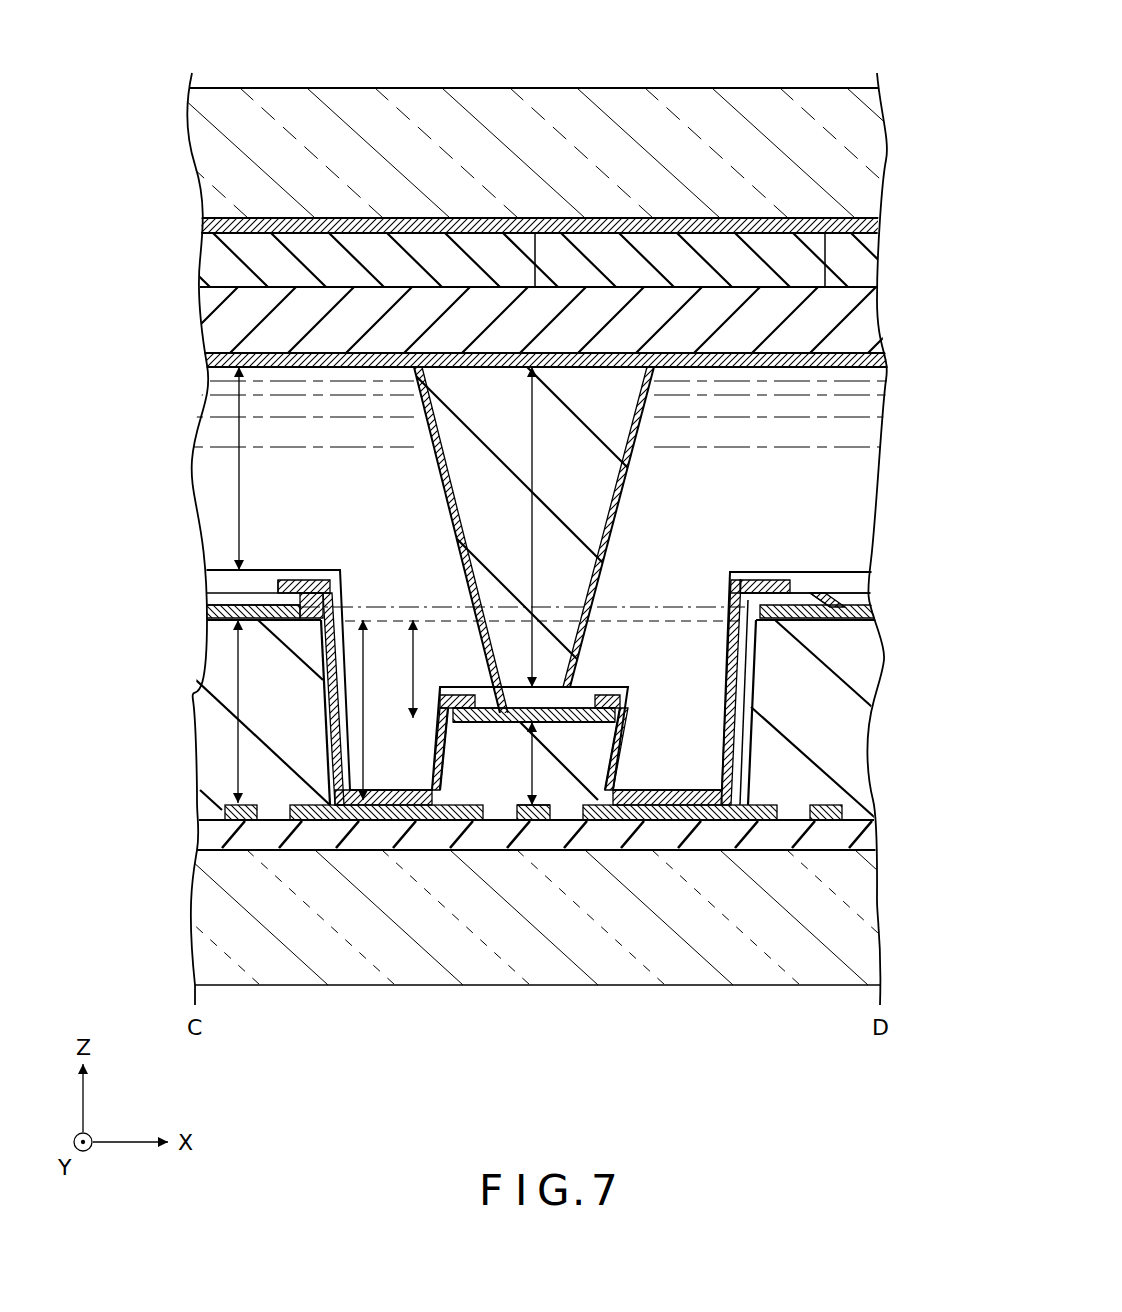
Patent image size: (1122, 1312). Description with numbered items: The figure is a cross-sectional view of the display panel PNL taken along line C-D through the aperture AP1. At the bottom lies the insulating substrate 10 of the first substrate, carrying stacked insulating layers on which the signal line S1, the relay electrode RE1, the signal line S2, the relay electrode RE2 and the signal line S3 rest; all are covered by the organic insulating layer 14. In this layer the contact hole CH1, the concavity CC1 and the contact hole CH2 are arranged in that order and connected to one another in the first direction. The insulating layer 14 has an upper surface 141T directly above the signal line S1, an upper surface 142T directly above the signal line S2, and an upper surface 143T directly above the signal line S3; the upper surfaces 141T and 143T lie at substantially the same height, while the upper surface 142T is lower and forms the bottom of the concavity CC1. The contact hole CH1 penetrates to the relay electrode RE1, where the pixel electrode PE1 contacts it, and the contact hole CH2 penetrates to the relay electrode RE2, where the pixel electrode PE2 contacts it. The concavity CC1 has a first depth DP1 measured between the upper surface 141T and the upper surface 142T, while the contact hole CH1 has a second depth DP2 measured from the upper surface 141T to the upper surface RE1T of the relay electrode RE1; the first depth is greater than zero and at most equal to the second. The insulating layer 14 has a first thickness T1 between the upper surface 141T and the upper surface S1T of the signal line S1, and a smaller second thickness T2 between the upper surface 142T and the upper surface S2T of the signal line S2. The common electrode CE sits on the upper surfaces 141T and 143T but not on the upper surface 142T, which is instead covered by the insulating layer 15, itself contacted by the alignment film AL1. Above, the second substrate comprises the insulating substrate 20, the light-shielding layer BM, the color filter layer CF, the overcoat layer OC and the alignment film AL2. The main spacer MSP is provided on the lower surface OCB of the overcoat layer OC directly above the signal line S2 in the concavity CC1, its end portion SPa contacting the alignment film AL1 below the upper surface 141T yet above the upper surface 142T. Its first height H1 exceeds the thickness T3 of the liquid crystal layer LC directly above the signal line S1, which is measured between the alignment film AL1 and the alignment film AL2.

The display panel PNL is at (780, 84).
The insulating substrate 20 is at (207, 140).
The light-shielding layer BM is at (207, 226).
The color filter layer CF is at (213, 268).
The overcoat layer OC is at (207, 318).
The alignment film AL2 is at (207, 360).
The lower surface of overcoat layer OCB is at (457, 364).
The liquid crystal layer LC is at (207, 490).
The main spacer MSP is at (608, 484).
The first height H1 is at (534, 450).
The thickness of liquid crystal layer T3 is at (241, 470).
The upper surface 141T is at (262, 600).
The pixel electrode PE1 is at (306, 582).
The second depth DP2 is at (362, 618).
The upper surface 142T is at (444, 684).
The contact hole CH1 is at (383, 727).
The end portion SPa is at (553, 657).
The aperture AP1 is at (710, 606).
The pixel electrode PE2 is at (770, 590).
The upper surface 143T is at (818, 600).
The contact hole CH2 is at (665, 712).
The alignment film AL1 is at (207, 572).
The insulating layer 15 is at (207, 603).
The common electrode CE is at (207, 613).
The insulating layer 14 is at (215, 665).
The first thickness T1 is at (240, 704).
The first depth DP1 is at (414, 690).
The concavity CC1 is at (597, 686).
The second thickness T2 is at (530, 766).
The upper surface of signal line S1T is at (230, 803).
The insulating substrate 10 is at (207, 905).
The signal line S1 is at (237, 822).
The relay electrode RE1 is at (325, 822).
The upper surface of relay electrode RE1T is at (412, 790).
The upper surface of signal line S2T is at (520, 803).
The signal line S2 is at (540, 822).
The relay electrode RE2 is at (703, 822).
The signal line S3 is at (826, 822).